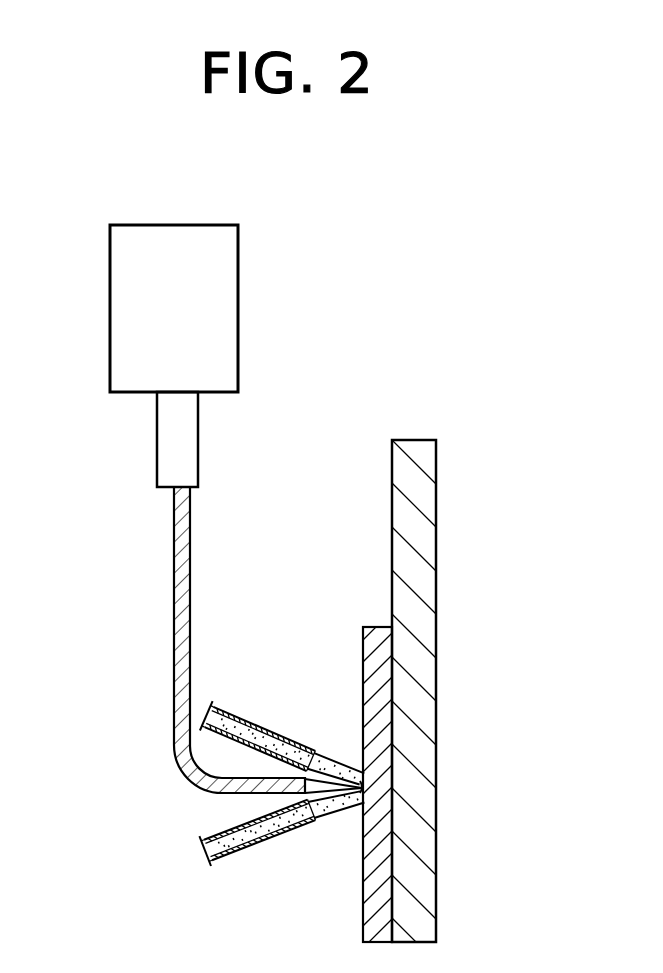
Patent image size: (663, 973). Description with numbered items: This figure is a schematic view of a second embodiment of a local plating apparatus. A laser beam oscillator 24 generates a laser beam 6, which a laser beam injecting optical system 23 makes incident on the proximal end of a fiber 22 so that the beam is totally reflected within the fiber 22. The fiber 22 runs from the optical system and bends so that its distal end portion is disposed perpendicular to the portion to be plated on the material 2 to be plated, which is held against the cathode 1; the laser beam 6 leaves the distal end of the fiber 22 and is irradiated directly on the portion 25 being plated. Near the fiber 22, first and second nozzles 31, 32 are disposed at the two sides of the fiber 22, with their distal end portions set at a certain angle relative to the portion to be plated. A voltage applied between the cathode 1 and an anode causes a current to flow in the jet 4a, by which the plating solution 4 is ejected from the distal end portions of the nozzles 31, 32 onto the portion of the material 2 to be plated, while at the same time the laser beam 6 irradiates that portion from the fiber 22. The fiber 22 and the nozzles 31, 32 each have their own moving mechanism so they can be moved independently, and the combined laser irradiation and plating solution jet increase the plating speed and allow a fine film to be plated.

The cathode 1 is at (430, 455).
The material to be plated 2 is at (369, 639).
The plating solution 4 is at (258, 798).
The jet 4a is at (326, 752).
The laser beam 6 is at (332, 768).
The fiber 22 is at (173, 545).
The laser beam injecting optical system 23 is at (190, 422).
The laser beam oscillator 24 is at (228, 304).
The portion being plated 25 is at (340, 783).
The first nozzle 31 is at (267, 727).
The second nozzle 32 is at (258, 878).